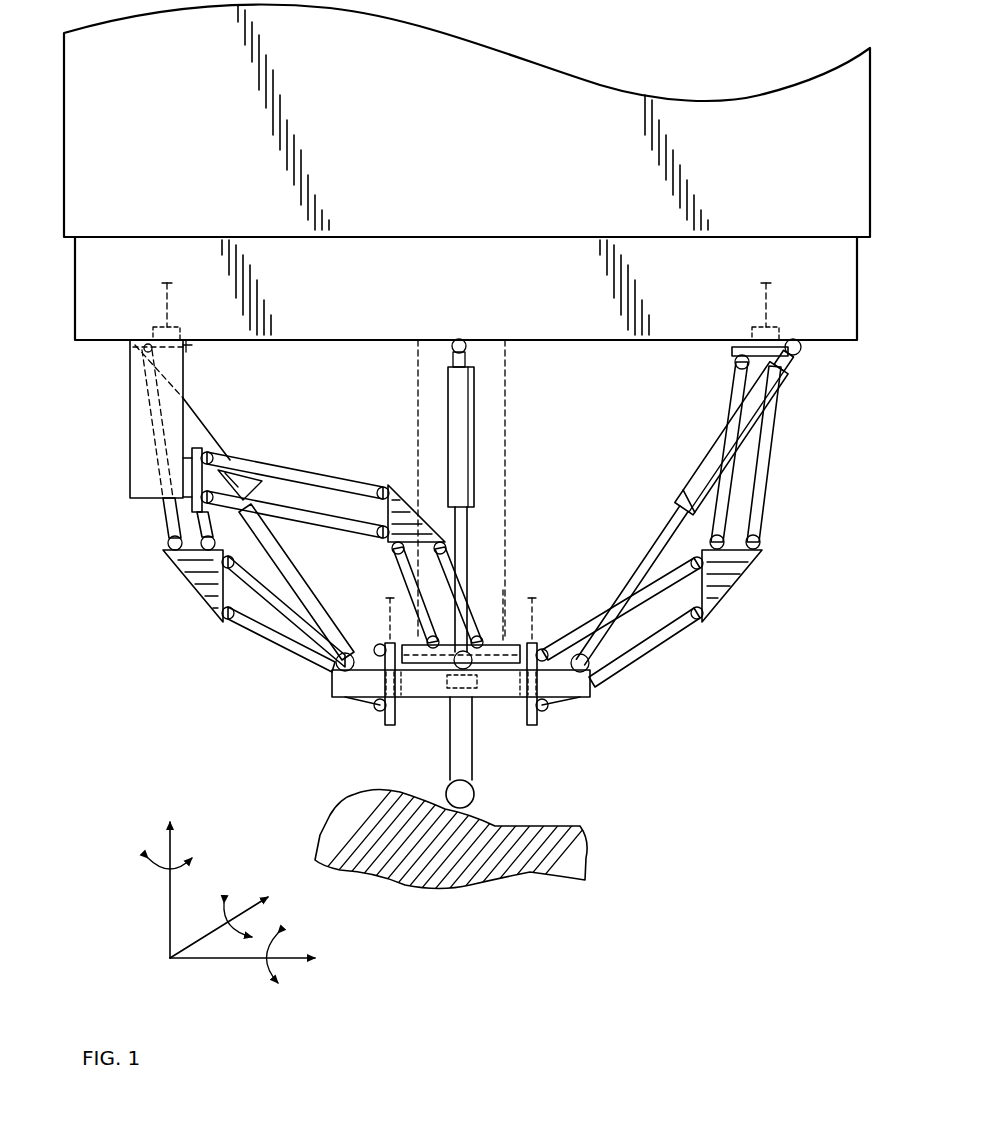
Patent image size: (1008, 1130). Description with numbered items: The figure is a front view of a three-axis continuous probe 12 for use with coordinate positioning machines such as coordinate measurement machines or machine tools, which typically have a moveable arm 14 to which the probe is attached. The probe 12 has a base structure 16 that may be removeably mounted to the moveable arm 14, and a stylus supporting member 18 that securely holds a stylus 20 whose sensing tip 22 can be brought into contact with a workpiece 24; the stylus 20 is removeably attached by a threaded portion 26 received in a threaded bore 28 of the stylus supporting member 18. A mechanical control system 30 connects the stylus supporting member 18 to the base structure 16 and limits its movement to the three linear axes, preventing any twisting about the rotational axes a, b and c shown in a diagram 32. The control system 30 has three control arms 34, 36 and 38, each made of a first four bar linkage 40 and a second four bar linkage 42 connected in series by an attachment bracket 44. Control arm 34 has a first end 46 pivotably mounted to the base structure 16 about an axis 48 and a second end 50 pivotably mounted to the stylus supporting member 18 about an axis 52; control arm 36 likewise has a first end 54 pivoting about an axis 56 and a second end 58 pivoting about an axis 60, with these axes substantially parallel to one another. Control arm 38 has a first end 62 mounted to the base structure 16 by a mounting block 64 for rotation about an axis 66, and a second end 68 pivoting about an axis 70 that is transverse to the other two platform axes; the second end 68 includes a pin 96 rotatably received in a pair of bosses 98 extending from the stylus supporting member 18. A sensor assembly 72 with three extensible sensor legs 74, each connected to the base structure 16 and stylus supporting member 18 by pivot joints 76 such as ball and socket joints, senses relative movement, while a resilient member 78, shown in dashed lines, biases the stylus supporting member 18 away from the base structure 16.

The probe 12 is at (862, 356).
The moveable arm 14 is at (855, 133).
The base structure 16 is at (858, 292).
The stylus supporting member 18 is at (572, 700).
The stylus 20 is at (468, 765).
The sensing tip 22 is at (473, 795).
The workpiece 24 is at (583, 838).
The threaded portion 26 is at (472, 735).
The threaded bore 28 is at (448, 735).
The mechanical control system 30 is at (790, 531).
The diagram 32 is at (108, 862).
The control arm 34 is at (780, 423).
The control arm 36 is at (150, 468).
The control arm 38 is at (302, 530).
The first four bar linkage 40 is at (165, 505).
The second four bar linkage 42 is at (242, 630).
The attachment bracket 44 is at (185, 568).
The first end 46 is at (732, 351).
The axis 48 is at (769, 288).
The second end 50 is at (535, 725).
The axis 52 is at (535, 600).
The first end 54 is at (188, 348).
The axis 56 is at (170, 288).
The second end 58 is at (386, 724).
The axis 60 is at (385, 602).
The first end 62 is at (185, 512).
The mounting block 64 is at (130, 398).
The axis 66 is at (245, 484).
The second end 68 is at (418, 638).
The axis 70 is at (360, 685).
The sensor assembly 72 is at (233, 448).
The sensor leg 74 is at (200, 420).
The pivot joint 76 is at (140, 350).
The resilient member 78 is at (506, 368).
The pin 96 is at (508, 625).
The bosses 98 is at (395, 695).